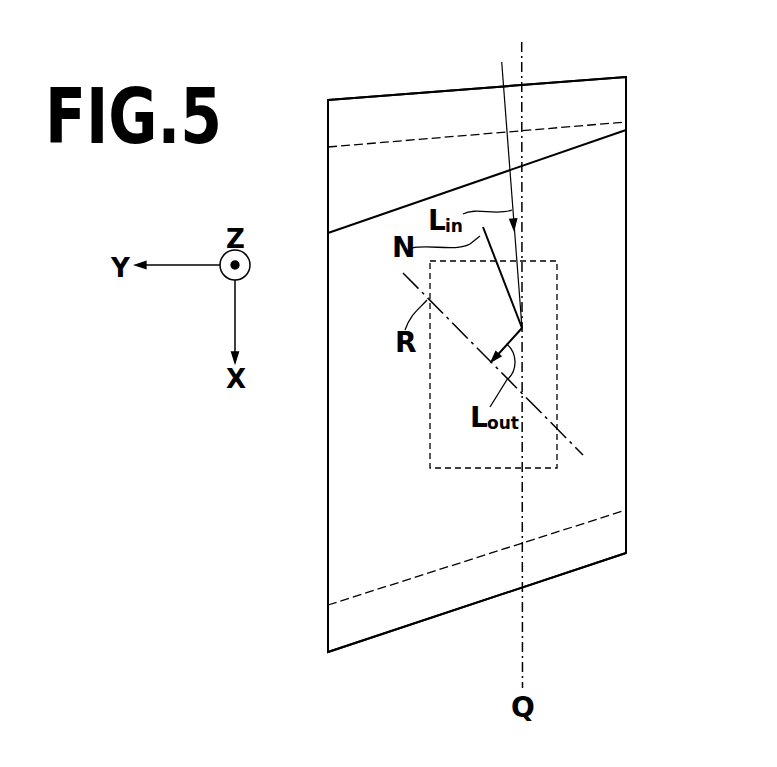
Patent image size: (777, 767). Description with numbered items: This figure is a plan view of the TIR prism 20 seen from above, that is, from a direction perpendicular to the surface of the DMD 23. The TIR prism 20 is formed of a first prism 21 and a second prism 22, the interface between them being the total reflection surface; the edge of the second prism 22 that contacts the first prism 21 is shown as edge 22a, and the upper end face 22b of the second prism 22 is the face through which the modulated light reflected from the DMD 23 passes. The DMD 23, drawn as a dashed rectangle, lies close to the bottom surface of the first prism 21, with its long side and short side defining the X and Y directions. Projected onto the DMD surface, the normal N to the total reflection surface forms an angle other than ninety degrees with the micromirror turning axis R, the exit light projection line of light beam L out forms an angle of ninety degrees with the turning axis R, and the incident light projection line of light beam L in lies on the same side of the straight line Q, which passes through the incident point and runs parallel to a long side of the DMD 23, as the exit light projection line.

The TIR prism 20 is at (371, 72).
The first prism 21 is at (568, 74).
The second prism 22 is at (637, 302).
The edge of the second prism 22a is at (565, 152).
The upper end face of the second prism 22b is at (610, 417).
The DMD 23 is at (558, 347).